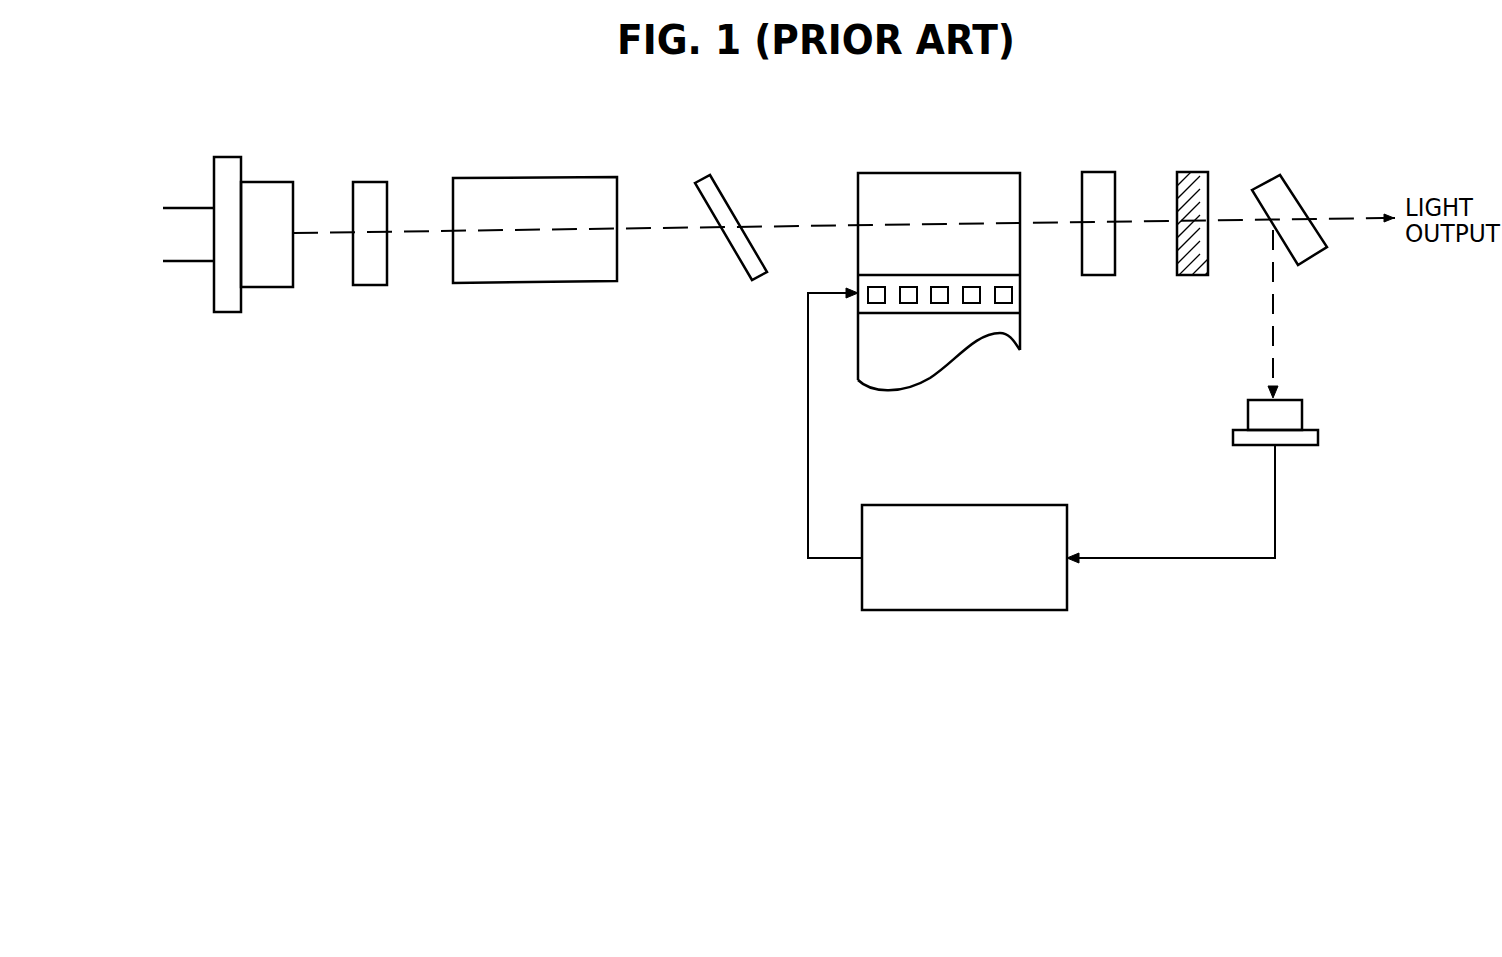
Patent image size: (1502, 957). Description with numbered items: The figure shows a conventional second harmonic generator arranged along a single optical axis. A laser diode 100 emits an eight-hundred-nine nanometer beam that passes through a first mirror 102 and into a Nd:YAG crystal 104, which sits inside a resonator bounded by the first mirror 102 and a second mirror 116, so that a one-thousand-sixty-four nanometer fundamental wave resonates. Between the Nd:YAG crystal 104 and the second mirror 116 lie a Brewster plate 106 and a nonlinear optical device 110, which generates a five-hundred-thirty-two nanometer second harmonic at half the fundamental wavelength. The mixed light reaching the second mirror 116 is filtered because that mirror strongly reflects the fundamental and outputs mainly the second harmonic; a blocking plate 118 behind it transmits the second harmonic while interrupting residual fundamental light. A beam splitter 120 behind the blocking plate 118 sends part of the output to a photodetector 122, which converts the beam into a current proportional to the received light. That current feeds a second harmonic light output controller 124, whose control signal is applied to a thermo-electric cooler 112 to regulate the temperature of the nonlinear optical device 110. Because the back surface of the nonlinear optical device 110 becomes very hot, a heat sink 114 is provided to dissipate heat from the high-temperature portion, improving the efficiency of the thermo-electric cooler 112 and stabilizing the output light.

The laser diode 100 is at (235, 155).
The first mirror 102 is at (372, 180).
The Nd:YAG crystal 104 is at (523, 177).
The Brewster plate 106 is at (720, 187).
The nonlinear optical device 110 is at (1010, 248).
The thermo-electric cooler 112 is at (1017, 298).
The heat sink 114 is at (1017, 325).
The second mirror 116 is at (1090, 170).
The blocking plate 118 is at (1195, 170).
The beam splitter 120 is at (1290, 180).
The photodetector 122 is at (1300, 398).
The second harmonic light output controller 124 is at (1007, 505).